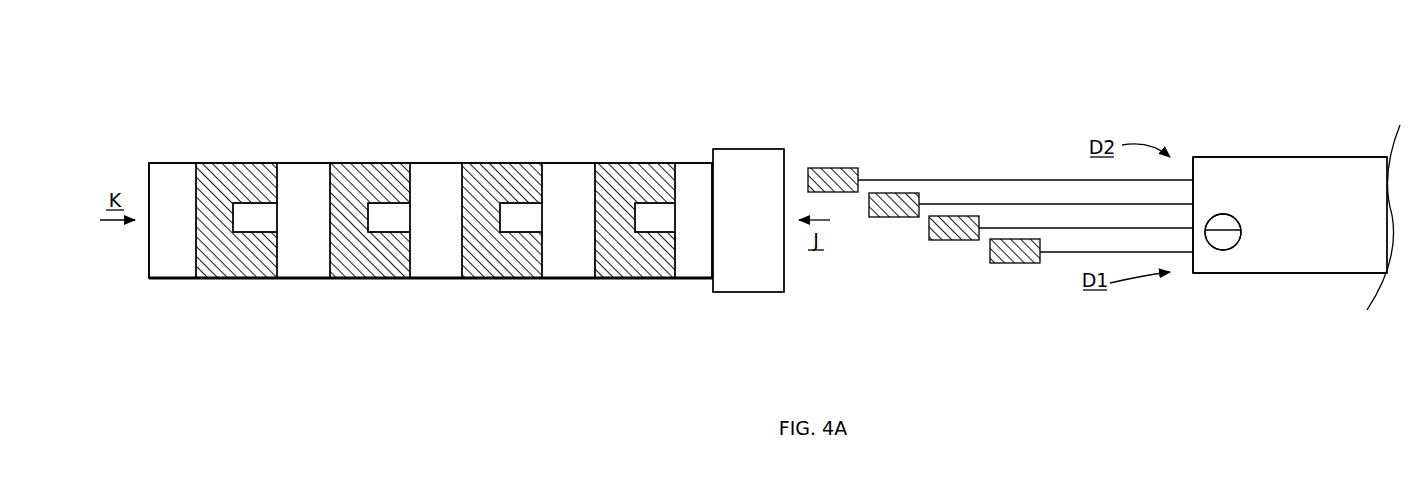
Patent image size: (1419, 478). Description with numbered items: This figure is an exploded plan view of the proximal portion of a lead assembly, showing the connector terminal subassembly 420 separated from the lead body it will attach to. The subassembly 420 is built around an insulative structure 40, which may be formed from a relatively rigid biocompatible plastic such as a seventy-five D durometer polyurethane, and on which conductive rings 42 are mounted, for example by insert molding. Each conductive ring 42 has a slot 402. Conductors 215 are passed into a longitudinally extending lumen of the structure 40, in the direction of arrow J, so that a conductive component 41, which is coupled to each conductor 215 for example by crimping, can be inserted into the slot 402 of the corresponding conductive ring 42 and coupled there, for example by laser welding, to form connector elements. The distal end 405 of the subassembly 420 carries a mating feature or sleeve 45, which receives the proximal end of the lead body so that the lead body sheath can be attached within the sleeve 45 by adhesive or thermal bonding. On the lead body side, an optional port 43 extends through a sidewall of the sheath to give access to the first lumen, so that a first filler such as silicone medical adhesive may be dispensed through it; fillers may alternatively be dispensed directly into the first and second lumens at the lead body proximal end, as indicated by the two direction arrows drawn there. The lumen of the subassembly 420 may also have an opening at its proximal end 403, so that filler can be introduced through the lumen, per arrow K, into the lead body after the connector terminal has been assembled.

The connector terminal subassembly 420 is at (548, 72).
The proximal end 403 is at (140, 140).
The conductive ring 42 is at (375, 175).
The slot 402 is at (250, 216).
The insulative structure 40 is at (175, 265).
The distal end 405 is at (751, 129).
The sleeve 45 is at (748, 278).
The conductive component 41 is at (838, 192).
The conductor 215 is at (1077, 252).
The port 43 is at (1240, 238).